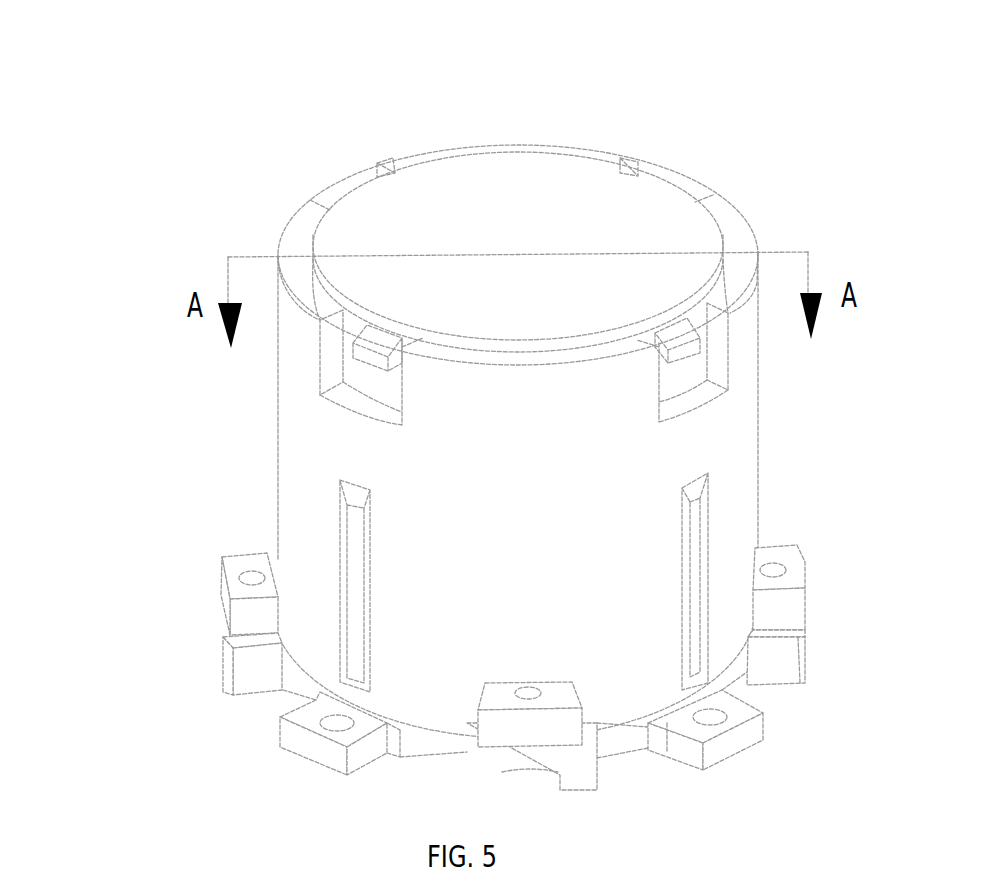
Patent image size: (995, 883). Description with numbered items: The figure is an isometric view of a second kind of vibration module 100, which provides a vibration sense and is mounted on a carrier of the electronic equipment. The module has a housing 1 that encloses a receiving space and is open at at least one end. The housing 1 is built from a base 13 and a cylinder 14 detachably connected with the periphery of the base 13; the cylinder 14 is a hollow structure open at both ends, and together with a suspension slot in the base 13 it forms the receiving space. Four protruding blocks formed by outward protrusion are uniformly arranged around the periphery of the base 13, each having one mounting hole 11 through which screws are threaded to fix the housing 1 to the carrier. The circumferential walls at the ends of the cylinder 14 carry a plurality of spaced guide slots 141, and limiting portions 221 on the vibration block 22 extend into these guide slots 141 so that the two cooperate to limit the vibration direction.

The vibration module 100 is at (300, 140).
The housing 1 is at (78, 520).
The mounting hole 11 is at (728, 733).
The base 13 is at (303, 688).
The cylinder 14 is at (300, 553).
The guide slot 141 is at (708, 418).
The vibration block 22 is at (627, 202).
The limiting portion 221 is at (688, 352).